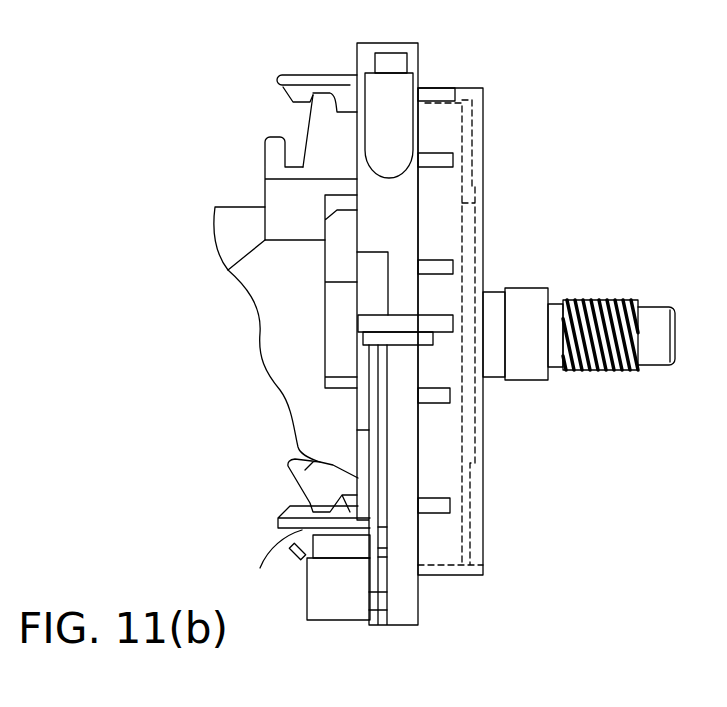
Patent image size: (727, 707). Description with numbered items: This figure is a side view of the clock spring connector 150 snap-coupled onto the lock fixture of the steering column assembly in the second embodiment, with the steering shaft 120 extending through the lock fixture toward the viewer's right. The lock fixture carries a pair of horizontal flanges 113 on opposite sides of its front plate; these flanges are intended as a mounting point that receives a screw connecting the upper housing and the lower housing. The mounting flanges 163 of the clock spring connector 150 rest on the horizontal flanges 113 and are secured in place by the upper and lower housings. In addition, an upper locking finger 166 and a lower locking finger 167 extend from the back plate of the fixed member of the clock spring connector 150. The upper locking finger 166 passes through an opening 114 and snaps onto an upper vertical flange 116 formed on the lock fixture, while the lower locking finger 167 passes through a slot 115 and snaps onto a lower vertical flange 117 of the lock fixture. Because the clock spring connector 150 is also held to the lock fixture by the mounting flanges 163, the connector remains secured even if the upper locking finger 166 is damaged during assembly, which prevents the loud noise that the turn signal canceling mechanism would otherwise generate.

The horizontal flanges 113 is at (440, 323).
The opening 114 is at (373, 70).
The slot 115 is at (307, 532).
The upper vertical flange 116 is at (328, 157).
The lower vertical flange 117 is at (298, 458).
The steering shaft 120 is at (613, 307).
The clock spring connector 150 is at (473, 218).
The mounting flanges 163 is at (427, 347).
The upper locking finger 166 is at (283, 75).
The lower locking finger 167 is at (290, 506).